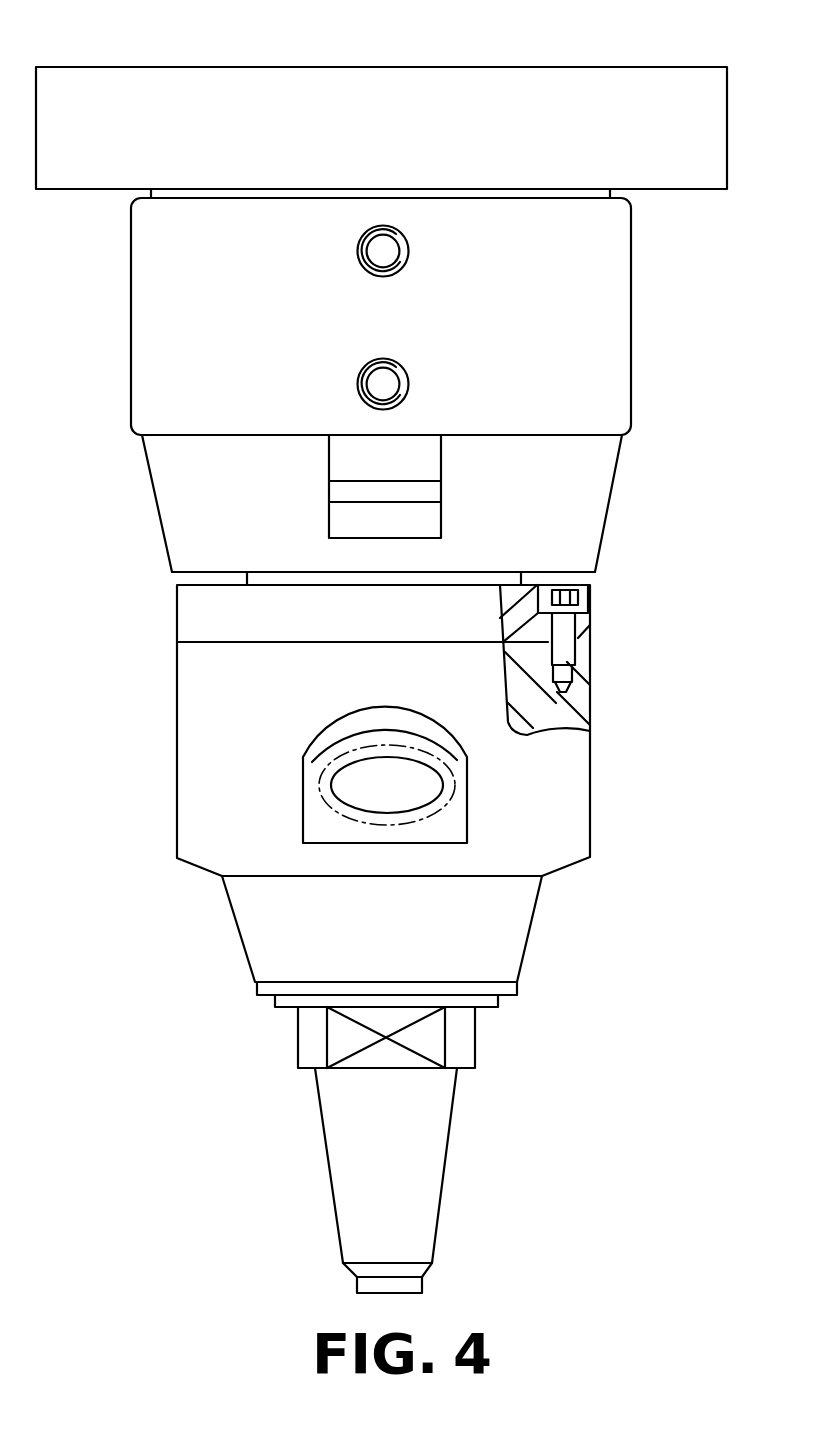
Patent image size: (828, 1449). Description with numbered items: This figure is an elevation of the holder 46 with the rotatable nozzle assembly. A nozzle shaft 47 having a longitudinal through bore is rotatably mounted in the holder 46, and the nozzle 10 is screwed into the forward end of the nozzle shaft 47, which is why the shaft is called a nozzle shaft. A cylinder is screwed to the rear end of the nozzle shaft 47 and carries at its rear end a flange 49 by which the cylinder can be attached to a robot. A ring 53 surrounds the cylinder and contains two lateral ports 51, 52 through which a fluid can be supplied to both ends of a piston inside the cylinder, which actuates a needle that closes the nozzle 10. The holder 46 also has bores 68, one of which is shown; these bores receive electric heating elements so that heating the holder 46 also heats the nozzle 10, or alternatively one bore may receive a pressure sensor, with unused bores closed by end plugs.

The flange 49 is at (122, 106).
The ring 53 is at (605, 330).
The lateral port 51 is at (391, 251).
The lateral port 52 is at (395, 384).
The nozzle shaft 47 is at (177, 518).
The holder 46 is at (215, 837).
The bore 68 is at (423, 793).
The nozzle 10 is at (423, 1290).